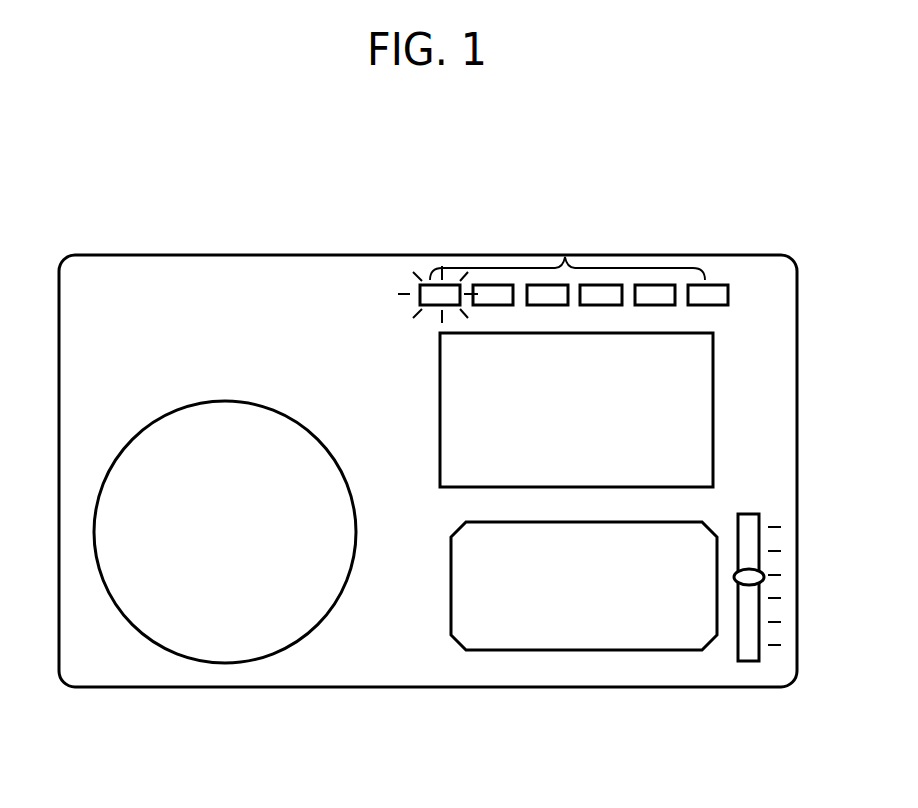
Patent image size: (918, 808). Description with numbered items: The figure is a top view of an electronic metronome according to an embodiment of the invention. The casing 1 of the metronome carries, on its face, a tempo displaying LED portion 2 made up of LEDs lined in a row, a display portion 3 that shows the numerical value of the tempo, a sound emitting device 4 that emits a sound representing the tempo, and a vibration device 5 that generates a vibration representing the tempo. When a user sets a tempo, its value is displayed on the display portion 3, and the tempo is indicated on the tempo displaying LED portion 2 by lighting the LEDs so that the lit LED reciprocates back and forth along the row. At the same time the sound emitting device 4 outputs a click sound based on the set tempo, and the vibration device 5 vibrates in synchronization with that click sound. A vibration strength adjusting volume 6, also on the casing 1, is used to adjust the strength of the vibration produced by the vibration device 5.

The casing 1 is at (299, 293).
The tempo displaying LED portion 2 is at (568, 237).
The display portion 3 is at (686, 390).
The sound emitting device 4 is at (209, 631).
The vibration device 5 is at (567, 621).
The vibration strength adjusting volume 6 is at (753, 611).